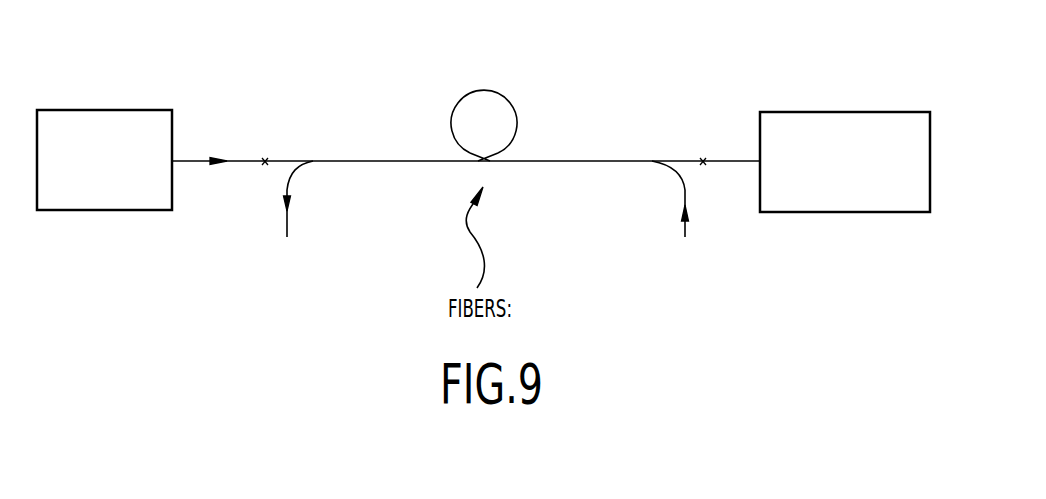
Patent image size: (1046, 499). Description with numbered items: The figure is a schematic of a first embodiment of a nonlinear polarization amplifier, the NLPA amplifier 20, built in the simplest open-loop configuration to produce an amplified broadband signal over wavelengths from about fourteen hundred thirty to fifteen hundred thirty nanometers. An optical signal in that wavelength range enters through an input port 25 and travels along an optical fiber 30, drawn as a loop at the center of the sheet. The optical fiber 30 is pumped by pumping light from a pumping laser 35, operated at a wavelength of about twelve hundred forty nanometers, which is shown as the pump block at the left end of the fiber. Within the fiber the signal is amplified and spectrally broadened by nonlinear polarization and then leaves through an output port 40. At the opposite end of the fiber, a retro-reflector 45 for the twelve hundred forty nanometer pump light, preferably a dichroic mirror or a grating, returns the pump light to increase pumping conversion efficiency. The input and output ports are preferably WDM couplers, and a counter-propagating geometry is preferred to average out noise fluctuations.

The NLPA amplifier 20 is at (345, 72).
The input port 25 is at (678, 178).
The optical fiber 30 is at (510, 102).
The pumping laser 35 is at (120, 110).
The output port 40 is at (300, 177).
The 1240 nm retro-reflector 45 is at (847, 112).